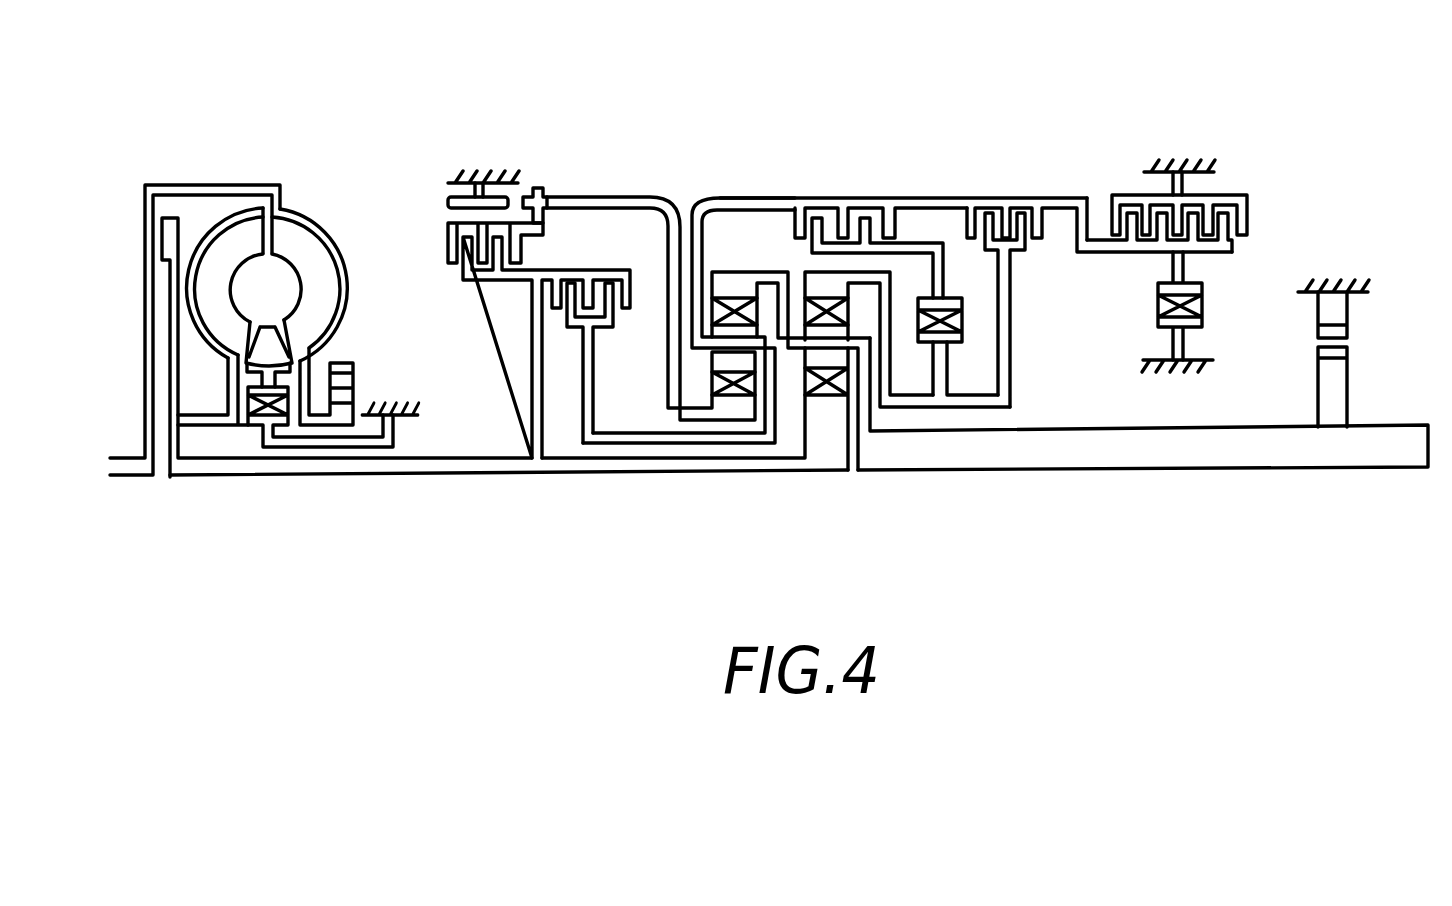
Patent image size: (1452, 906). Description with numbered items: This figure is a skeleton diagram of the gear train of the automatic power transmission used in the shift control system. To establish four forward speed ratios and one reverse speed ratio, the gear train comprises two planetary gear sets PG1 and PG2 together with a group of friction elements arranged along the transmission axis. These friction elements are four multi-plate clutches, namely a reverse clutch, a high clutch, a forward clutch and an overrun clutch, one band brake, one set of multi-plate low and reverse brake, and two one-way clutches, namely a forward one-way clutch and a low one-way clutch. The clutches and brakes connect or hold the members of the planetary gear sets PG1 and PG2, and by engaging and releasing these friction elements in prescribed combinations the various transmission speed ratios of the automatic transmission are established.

The planetary gear set PG1 is at (735, 280).
The planetary gear set PG2 is at (825, 283).